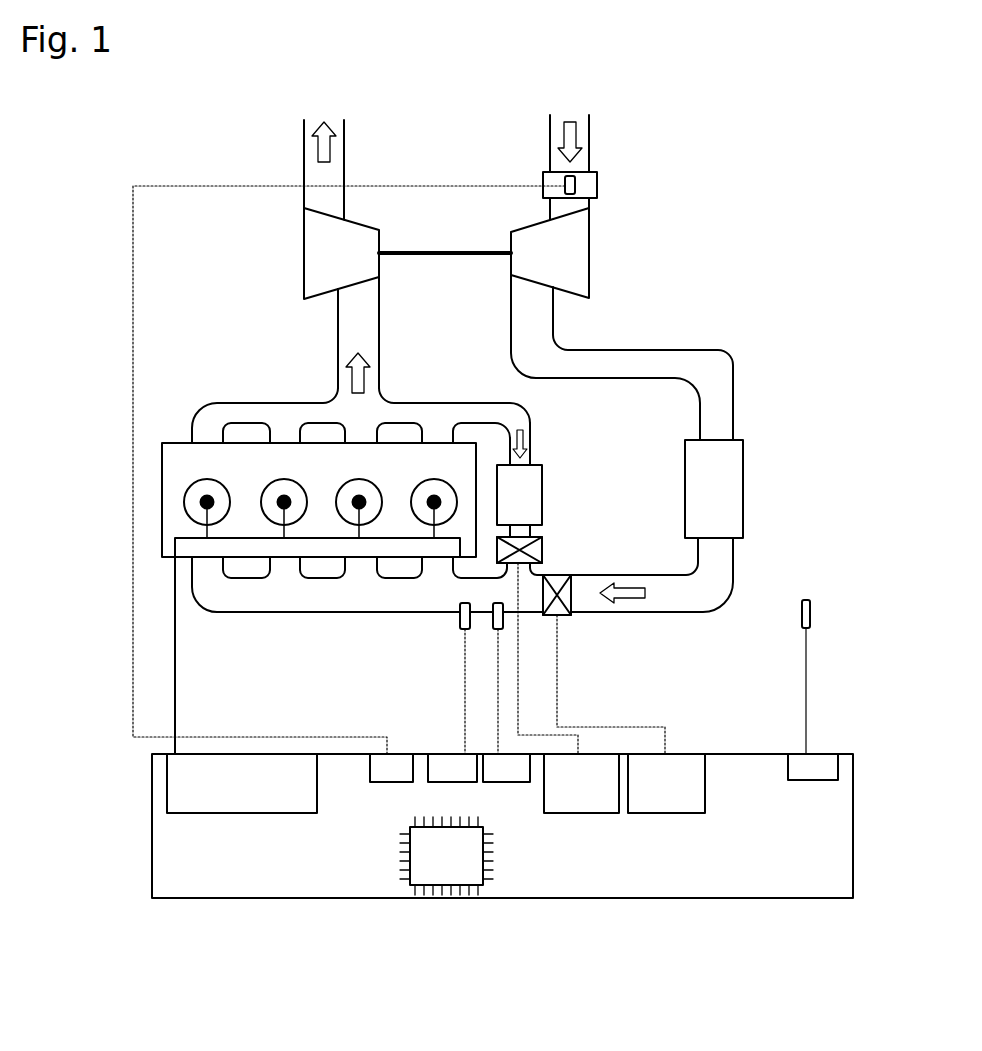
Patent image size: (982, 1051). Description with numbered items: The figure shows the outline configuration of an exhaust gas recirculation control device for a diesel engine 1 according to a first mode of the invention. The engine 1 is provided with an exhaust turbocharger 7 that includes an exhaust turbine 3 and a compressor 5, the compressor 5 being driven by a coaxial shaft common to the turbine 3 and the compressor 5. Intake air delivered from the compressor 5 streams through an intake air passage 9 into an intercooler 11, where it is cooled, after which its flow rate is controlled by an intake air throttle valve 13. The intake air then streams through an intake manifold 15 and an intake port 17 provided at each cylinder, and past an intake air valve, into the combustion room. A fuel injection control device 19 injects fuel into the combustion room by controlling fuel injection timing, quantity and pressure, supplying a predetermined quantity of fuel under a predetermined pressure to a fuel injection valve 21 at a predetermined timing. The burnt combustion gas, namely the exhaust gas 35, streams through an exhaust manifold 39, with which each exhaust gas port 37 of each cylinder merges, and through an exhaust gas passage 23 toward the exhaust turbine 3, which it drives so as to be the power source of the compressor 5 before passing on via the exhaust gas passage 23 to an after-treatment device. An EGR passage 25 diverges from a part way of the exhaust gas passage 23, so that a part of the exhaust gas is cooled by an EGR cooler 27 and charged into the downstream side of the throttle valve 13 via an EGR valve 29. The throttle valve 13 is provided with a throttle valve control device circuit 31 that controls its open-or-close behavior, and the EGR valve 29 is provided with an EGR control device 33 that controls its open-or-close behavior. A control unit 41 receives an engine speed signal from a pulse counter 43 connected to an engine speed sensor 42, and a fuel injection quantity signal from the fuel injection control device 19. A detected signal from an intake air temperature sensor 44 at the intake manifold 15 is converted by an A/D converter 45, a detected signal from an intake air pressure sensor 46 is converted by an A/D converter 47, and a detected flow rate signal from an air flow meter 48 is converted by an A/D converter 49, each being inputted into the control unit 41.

The engine 1 is at (178, 163).
The exhaust turbine 3 is at (304, 272).
The compressor 5 is at (589, 275).
The exhaust turbocharger 7 is at (440, 264).
The intake air passage 9 is at (733, 383).
The intercooler 11 is at (743, 478).
The intake air throttle valve 13 is at (572, 615).
The intake manifold 15 is at (378, 612).
The intake port 17 is at (265, 562).
The fuel injection control device 19 is at (202, 813).
The fuel injection valve 21 is at (162, 497).
The exhaust gas passage 23 is at (338, 338).
The EGR passage 25 is at (530, 420).
The EGR cooler 27 is at (542, 485).
The EGR valve 29 is at (542, 548).
The throttle valve control device circuit 31 is at (686, 813).
The EGR control device 33 is at (563, 813).
The exhaust gas 35 is at (370, 373).
The exhaust gas port 37 is at (265, 438).
The exhaust manifold 39 is at (280, 403).
The control unit 41 is at (853, 828).
The engine speed sensor 42 is at (810, 612).
The pulse counter 43 is at (853, 770).
The intake air temperature sensor 44 is at (458, 632).
The A/D converter 45 is at (455, 782).
The intake air pressure sensor 46 is at (492, 632).
The A/D converter 47 is at (510, 782).
The air flow meter 48 is at (597, 185).
The A/D converter 49 is at (390, 782).